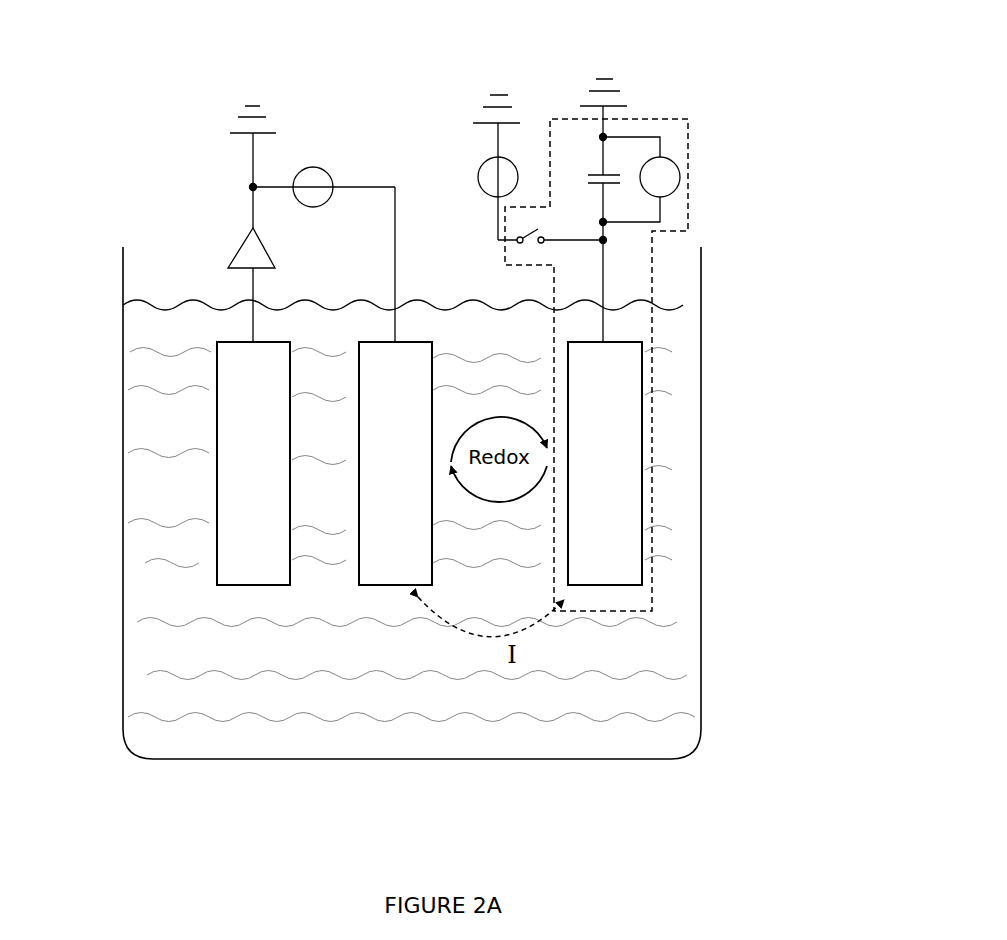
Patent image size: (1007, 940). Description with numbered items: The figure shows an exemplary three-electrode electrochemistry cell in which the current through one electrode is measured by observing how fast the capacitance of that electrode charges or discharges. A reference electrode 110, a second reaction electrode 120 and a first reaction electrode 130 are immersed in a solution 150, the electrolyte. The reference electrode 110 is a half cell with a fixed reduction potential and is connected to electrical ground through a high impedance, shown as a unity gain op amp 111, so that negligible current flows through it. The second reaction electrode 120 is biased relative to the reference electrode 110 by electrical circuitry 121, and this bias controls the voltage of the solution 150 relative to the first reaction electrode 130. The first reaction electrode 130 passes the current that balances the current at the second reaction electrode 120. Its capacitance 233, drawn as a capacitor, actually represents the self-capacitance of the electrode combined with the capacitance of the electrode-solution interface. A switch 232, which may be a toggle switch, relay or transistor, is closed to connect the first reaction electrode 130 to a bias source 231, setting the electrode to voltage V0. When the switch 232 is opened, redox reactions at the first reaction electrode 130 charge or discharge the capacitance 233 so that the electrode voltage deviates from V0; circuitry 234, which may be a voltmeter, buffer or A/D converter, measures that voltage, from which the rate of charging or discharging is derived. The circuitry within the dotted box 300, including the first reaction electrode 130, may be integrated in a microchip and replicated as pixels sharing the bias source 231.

The reference electrode 110 is at (230, 433).
The unity gain op amp 111 is at (246, 253).
The second reaction electrode 120 is at (386, 570).
The electrical circuitry 121 is at (329, 168).
The first reaction electrode 130 is at (614, 572).
The solution 150 is at (182, 690).
The bias source 231 is at (481, 159).
The switch 232 is at (515, 232).
The capacitance 233 is at (611, 173).
The circuitry 234 is at (685, 170).
The dotted box 300 is at (656, 275).